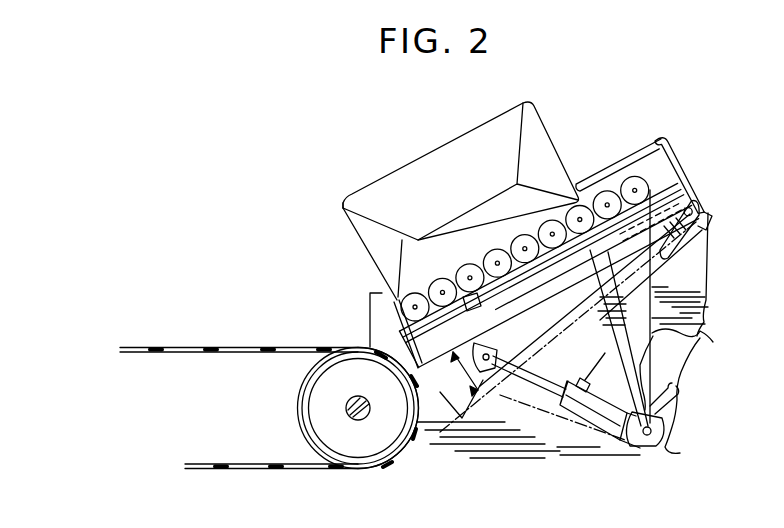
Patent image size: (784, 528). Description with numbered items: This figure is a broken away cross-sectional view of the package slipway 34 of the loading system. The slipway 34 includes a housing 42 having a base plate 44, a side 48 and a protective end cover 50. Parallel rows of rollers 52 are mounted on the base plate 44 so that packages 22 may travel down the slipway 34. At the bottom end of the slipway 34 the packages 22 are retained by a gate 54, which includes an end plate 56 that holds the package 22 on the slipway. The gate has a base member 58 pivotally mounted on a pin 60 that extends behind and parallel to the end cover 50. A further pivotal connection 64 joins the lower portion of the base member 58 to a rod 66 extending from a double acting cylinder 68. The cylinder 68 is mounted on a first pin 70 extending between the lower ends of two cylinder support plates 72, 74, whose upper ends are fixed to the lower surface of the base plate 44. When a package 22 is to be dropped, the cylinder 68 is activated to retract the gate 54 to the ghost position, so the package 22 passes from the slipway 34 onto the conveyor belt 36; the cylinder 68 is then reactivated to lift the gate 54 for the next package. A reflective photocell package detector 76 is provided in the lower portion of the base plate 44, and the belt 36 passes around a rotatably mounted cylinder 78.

The package 22 is at (465, 150).
The package slipway 34 is at (682, 149).
The conveyor belt 36 is at (183, 346).
The housing 42 is at (700, 196).
The base plate 44 is at (702, 210).
The side 48 is at (620, 164).
The protective end cover 50 is at (683, 152).
The rollers 52 is at (608, 192).
The gate 54 is at (372, 300).
The end plate 56 is at (376, 292).
The base member 58 is at (440, 394).
The pin 60 is at (702, 222).
The pivotal connection 64 is at (490, 372).
The rod 66 is at (557, 392).
The double acting cylinder 68 is at (622, 446).
The first pin 70 is at (658, 446).
The cylinder support plate 72 is at (700, 334).
The cylinder support plate 74 is at (677, 378).
The reflective photocell package detector 76 is at (463, 300).
The cylinder 78 is at (340, 458).